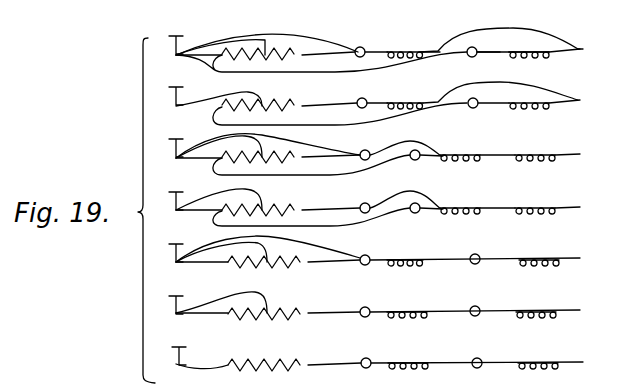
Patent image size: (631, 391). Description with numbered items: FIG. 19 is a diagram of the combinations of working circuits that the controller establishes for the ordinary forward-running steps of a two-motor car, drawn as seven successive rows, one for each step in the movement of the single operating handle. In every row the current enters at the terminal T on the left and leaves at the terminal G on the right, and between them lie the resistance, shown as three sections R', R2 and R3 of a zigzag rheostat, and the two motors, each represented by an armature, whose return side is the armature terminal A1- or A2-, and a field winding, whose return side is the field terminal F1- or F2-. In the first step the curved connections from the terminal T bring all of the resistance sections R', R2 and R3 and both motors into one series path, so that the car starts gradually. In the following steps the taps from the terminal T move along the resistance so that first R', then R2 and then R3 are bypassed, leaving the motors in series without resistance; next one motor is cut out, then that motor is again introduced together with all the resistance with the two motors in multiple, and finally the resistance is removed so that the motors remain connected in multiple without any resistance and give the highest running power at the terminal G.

The first resistance section R' is at (199, 36).
The second resistance section R2 is at (265, 40).
The third resistance section R3 is at (303, 52).
The negative armature terminal of first motor A1- is at (368, 49).
The negative field terminal of first motor F1- is at (419, 50).
The negative armature terminal of second motor A2- is at (478, 48).
The negative field terminal of second motor F2- is at (556, 48).
The terminal T is at (177, 200).
The ground terminal G is at (589, 207).